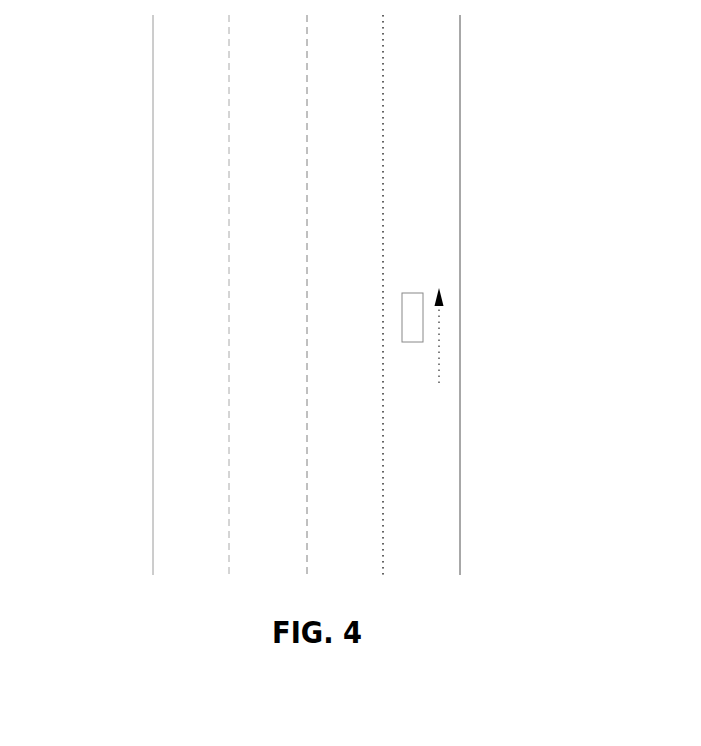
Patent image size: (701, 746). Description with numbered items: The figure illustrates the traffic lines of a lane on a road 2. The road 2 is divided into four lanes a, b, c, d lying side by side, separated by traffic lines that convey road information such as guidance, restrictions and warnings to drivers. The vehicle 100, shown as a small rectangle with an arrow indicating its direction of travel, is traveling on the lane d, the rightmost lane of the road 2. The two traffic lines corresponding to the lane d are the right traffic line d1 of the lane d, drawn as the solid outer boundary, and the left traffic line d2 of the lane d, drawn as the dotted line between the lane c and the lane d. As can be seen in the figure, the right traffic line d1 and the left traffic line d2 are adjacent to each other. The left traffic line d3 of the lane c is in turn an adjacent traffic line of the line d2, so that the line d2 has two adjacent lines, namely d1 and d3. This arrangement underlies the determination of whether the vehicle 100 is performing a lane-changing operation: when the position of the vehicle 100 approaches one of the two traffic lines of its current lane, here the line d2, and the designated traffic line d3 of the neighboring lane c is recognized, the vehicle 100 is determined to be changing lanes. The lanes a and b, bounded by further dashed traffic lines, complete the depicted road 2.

The road 2 is at (281, 345).
The vehicle 100 is at (413, 302).
The right traffic line of lane d d1 is at (460, 323).
The left traffic line of lane d d2 is at (383, 430).
The left traffic line of lane c d3 is at (307, 152).
The lane a is at (191, 295).
The lane b is at (268, 295).
The lane c is at (345, 295).
The lane d is at (421, 295).